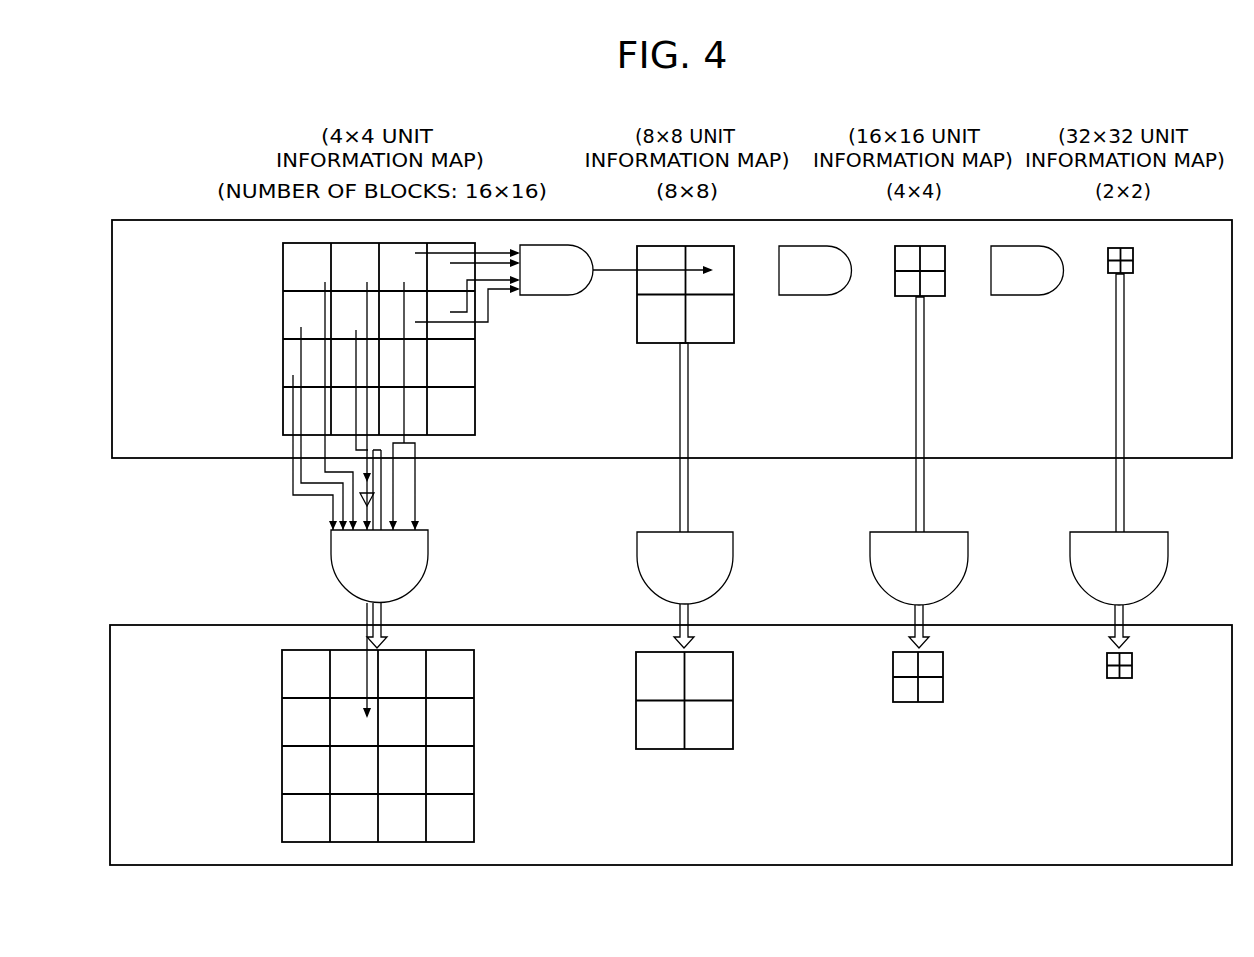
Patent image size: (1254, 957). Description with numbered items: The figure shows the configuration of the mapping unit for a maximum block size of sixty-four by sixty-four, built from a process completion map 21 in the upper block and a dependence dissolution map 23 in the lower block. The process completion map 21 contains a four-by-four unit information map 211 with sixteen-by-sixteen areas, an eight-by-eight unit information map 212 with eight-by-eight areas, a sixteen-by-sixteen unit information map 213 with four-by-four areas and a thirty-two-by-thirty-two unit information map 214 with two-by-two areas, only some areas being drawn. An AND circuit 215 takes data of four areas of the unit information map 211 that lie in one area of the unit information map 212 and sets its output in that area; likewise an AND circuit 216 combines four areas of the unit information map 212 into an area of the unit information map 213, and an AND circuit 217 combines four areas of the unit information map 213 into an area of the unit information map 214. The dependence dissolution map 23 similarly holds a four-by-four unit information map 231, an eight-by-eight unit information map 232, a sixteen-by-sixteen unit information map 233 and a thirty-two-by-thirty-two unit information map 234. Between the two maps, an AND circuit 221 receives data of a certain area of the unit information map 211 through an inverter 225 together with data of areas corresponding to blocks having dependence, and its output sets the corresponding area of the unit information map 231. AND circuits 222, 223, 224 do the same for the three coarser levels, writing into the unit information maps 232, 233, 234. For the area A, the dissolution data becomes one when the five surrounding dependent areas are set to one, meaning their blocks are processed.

The process completion map 21 is at (141, 220).
The dependence dissolution map 23 is at (140, 625).
The 4×4 unit information map 211 is at (283, 411).
The 8×8 unit information map 212 is at (723, 345).
The 16×16 unit information map 213 is at (940, 298).
The 32×32 unit information map 214 is at (1134, 266).
The AND circuit 215 is at (554, 297).
The AND circuit 216 is at (816, 297).
The AND circuit 217 is at (1030, 297).
The AND circuit 221 is at (331, 561).
The AND circuit 222 is at (637, 563).
The AND circuit 223 is at (870, 563).
The AND circuit 224 is at (1070, 563).
The inverter 225 is at (367, 498).
The 4×4 unit information map 231 is at (282, 818).
The 8×8 unit information map 232 is at (735, 751).
The 16×16 unit information map 233 is at (928, 704).
The 32×32 unit information map 234 is at (1123, 680).
The area A is at (340, 326).